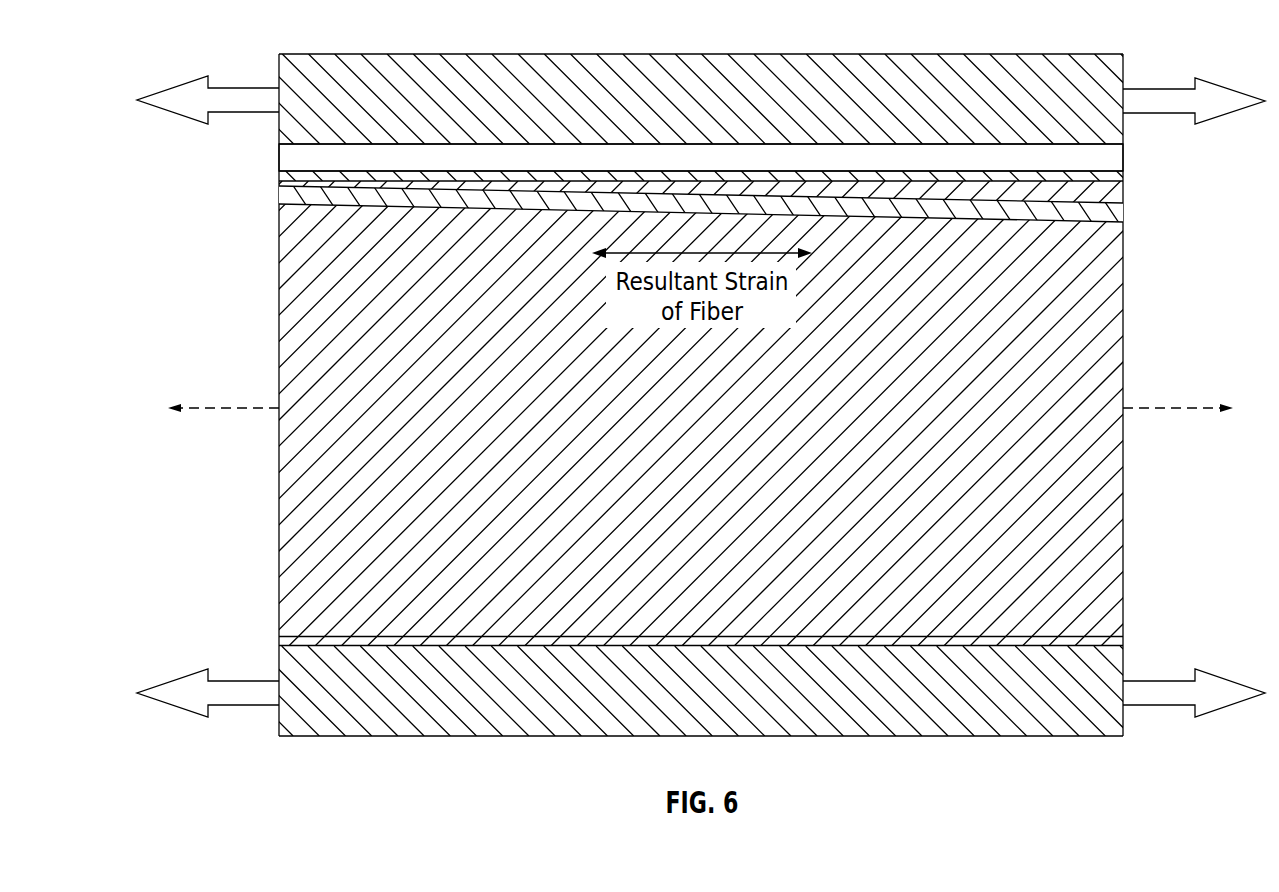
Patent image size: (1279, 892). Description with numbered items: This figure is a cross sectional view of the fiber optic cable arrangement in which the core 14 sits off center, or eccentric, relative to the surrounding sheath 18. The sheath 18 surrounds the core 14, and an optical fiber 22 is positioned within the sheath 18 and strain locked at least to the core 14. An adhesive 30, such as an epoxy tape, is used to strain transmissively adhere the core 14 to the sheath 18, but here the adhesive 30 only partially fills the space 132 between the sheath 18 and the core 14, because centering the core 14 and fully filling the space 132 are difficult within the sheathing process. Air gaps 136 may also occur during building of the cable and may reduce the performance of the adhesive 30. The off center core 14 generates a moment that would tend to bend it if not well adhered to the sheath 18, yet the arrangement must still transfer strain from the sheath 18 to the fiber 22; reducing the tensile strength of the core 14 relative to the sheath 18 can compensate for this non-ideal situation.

The core 14 is at (1107, 531).
The sheath 18 is at (751, 54).
The optical fiber 22 is at (1102, 222).
The adhesive 30 is at (972, 168).
The space 132 is at (347, 160).
The air gaps 136 is at (907, 142).